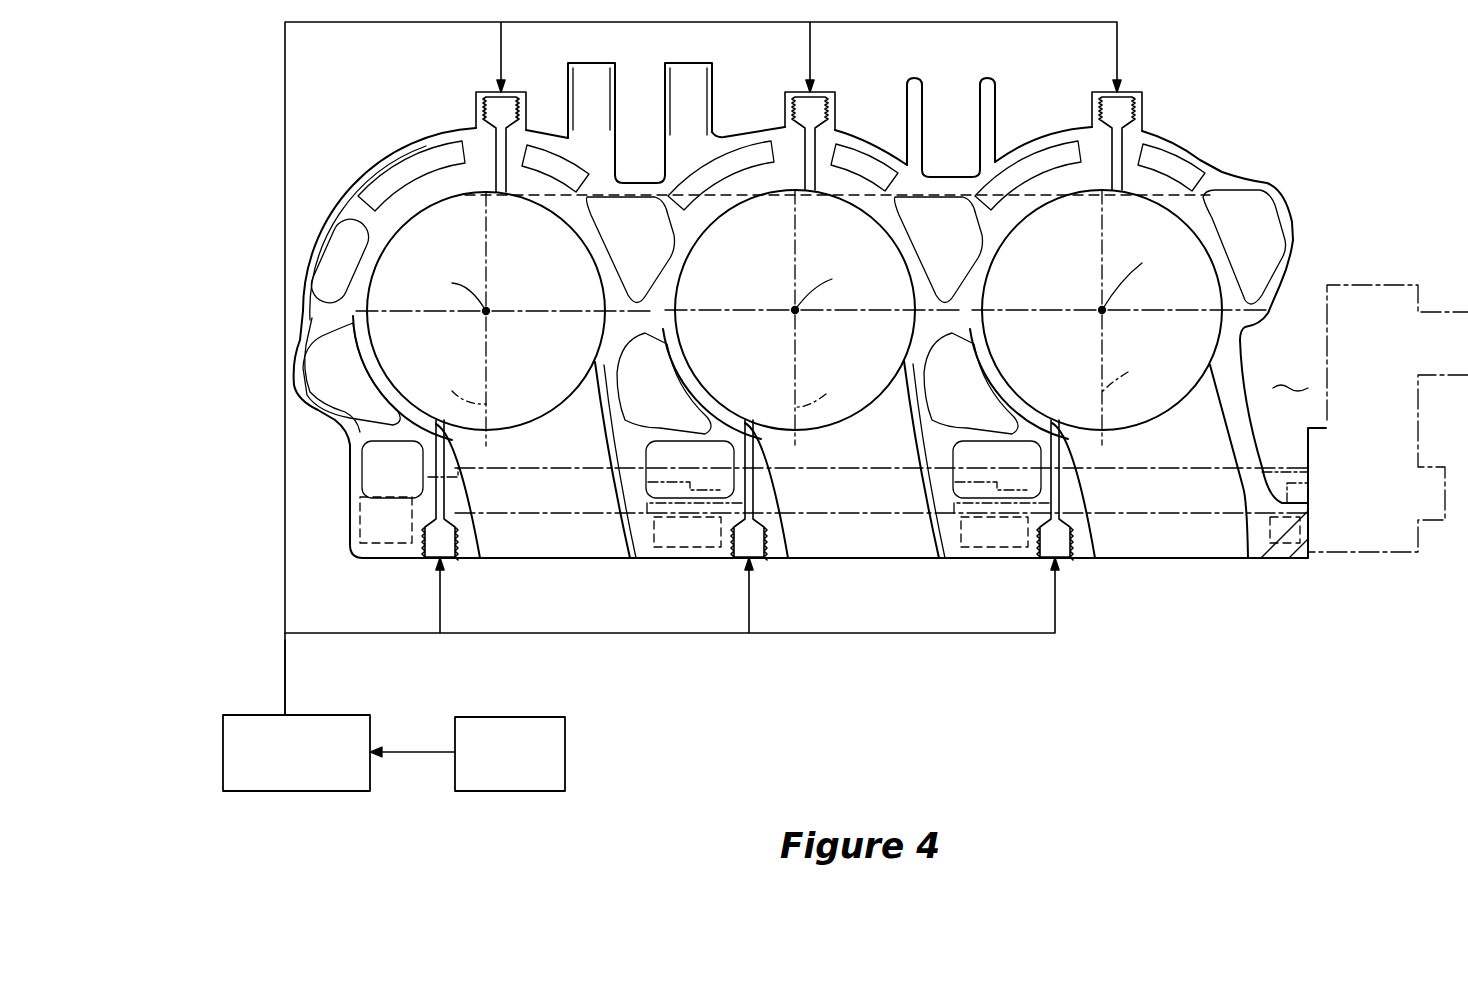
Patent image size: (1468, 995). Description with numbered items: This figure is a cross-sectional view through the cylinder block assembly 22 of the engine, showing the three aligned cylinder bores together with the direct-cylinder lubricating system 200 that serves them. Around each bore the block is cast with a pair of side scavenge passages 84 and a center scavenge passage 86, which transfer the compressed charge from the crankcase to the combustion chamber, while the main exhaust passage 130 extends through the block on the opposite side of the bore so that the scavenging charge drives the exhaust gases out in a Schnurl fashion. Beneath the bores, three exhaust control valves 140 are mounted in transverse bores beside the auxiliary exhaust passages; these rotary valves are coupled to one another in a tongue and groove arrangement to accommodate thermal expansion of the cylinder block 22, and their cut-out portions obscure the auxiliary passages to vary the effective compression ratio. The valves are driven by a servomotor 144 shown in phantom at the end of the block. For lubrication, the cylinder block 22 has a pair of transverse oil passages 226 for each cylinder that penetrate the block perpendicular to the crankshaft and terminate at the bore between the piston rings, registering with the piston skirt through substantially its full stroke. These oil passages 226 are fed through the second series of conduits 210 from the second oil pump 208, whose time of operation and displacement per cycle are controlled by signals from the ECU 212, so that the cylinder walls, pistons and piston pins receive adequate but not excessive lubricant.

The cylinder block assembly 22 is at (1231, 156).
The side scavenge passages 84 is at (627, 247).
The center scavenge passage 86 is at (397, 187).
The main exhaust passage 130 is at (550, 427).
The exhaust control valves 140 is at (580, 517).
The servomotor 144 is at (1347, 266).
The direct-cylinder lubricating system 200 is at (198, 686).
The second oil pump 208 is at (370, 735).
The second series of conduits 210 is at (285, 678).
The ECU 212 is at (565, 735).
The transverse oil passages 226 is at (498, 147).